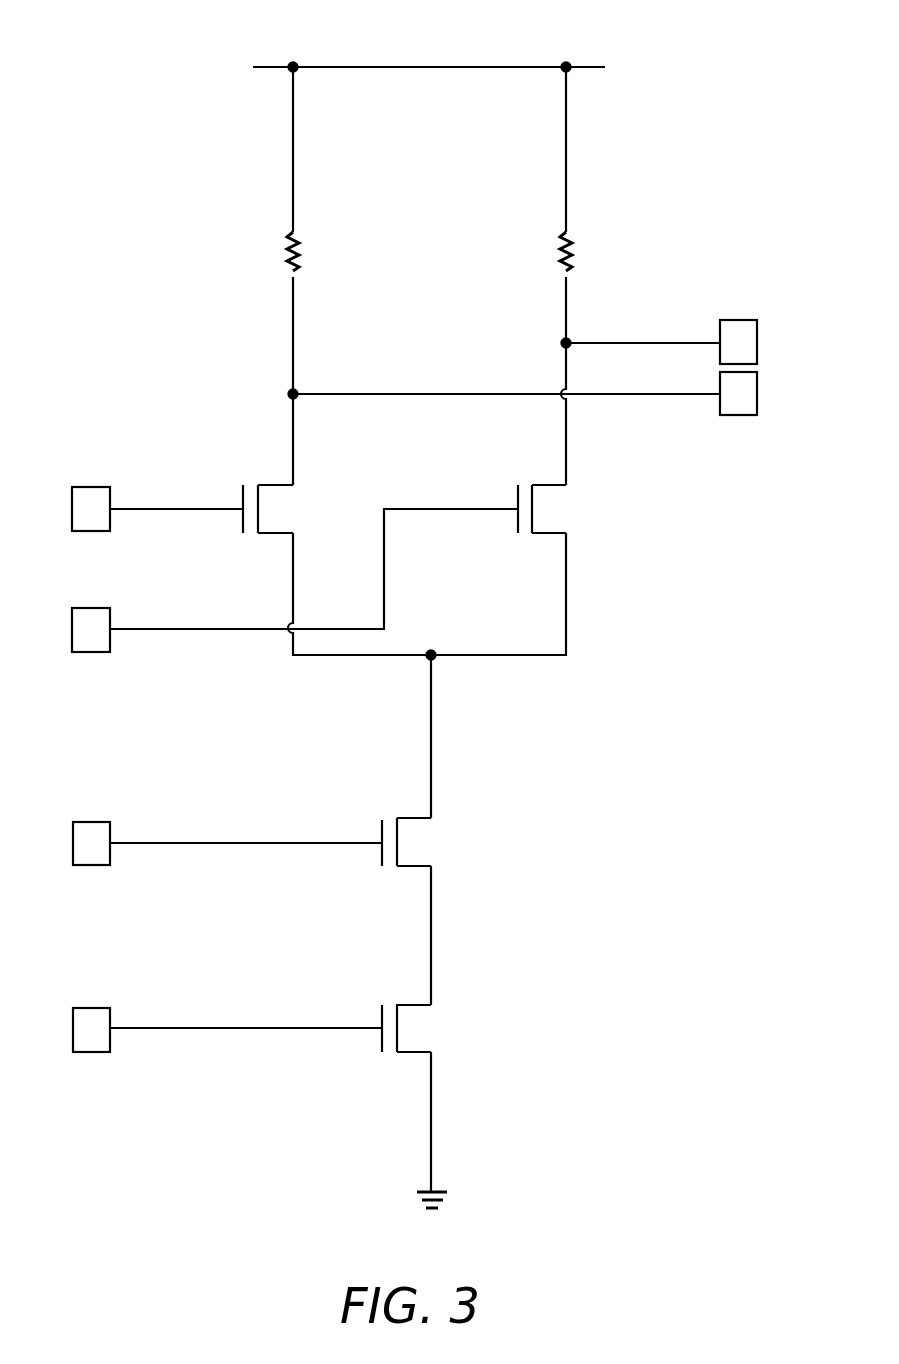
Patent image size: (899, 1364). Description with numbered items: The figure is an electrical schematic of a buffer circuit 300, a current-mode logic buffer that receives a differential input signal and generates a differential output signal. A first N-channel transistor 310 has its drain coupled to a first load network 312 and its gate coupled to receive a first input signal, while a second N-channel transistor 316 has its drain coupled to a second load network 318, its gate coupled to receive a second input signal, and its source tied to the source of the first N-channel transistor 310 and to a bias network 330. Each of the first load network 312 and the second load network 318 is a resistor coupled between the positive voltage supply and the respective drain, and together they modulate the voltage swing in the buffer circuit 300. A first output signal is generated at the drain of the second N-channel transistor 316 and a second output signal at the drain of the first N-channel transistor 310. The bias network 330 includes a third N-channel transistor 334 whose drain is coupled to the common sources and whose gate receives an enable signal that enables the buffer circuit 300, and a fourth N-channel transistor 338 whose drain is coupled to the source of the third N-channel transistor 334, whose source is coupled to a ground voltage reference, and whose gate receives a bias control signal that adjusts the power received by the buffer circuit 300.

The buffer circuit 300 is at (125, 50).
The first N-channel transistor 310 is at (260, 508).
The first load network 312 is at (300, 258).
The second N-channel transistor 316 is at (534, 508).
The second load network 318 is at (573, 258).
The bias network 330 is at (585, 868).
The third N-channel transistor 334 is at (399, 842).
The fourth N-channel transistor 338 is at (399, 1027).